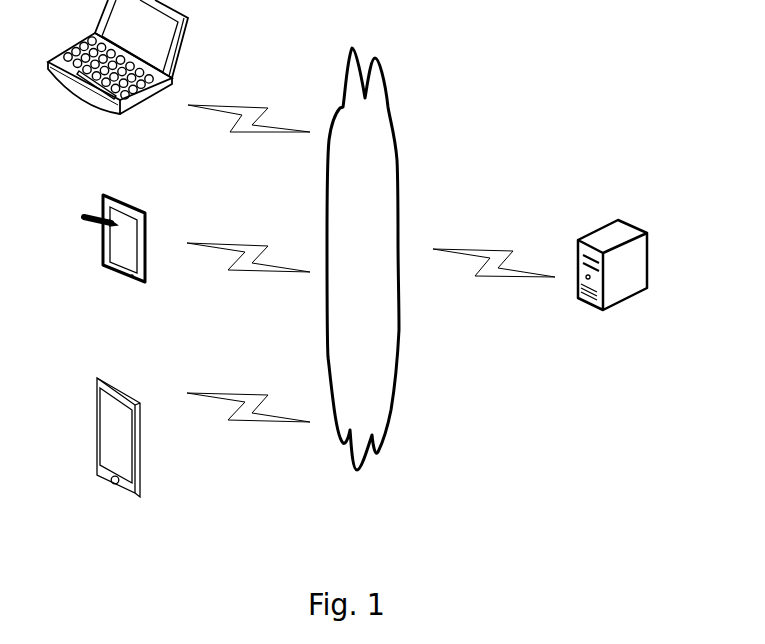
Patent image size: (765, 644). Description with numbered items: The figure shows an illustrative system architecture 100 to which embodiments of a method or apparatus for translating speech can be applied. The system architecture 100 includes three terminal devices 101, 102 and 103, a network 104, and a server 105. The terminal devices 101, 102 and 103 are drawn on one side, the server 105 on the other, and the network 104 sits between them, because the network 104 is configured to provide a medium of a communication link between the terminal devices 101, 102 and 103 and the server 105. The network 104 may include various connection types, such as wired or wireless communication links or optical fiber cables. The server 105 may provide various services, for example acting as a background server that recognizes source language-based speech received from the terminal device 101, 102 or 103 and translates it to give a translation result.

The system architecture 100 is at (637, 28).
The terminal device 101 is at (118, 460).
The terminal device 102 is at (114, 259).
The terminal device 103 is at (118, 76).
The network 104 is at (363, 259).
The server 105 is at (612, 290).